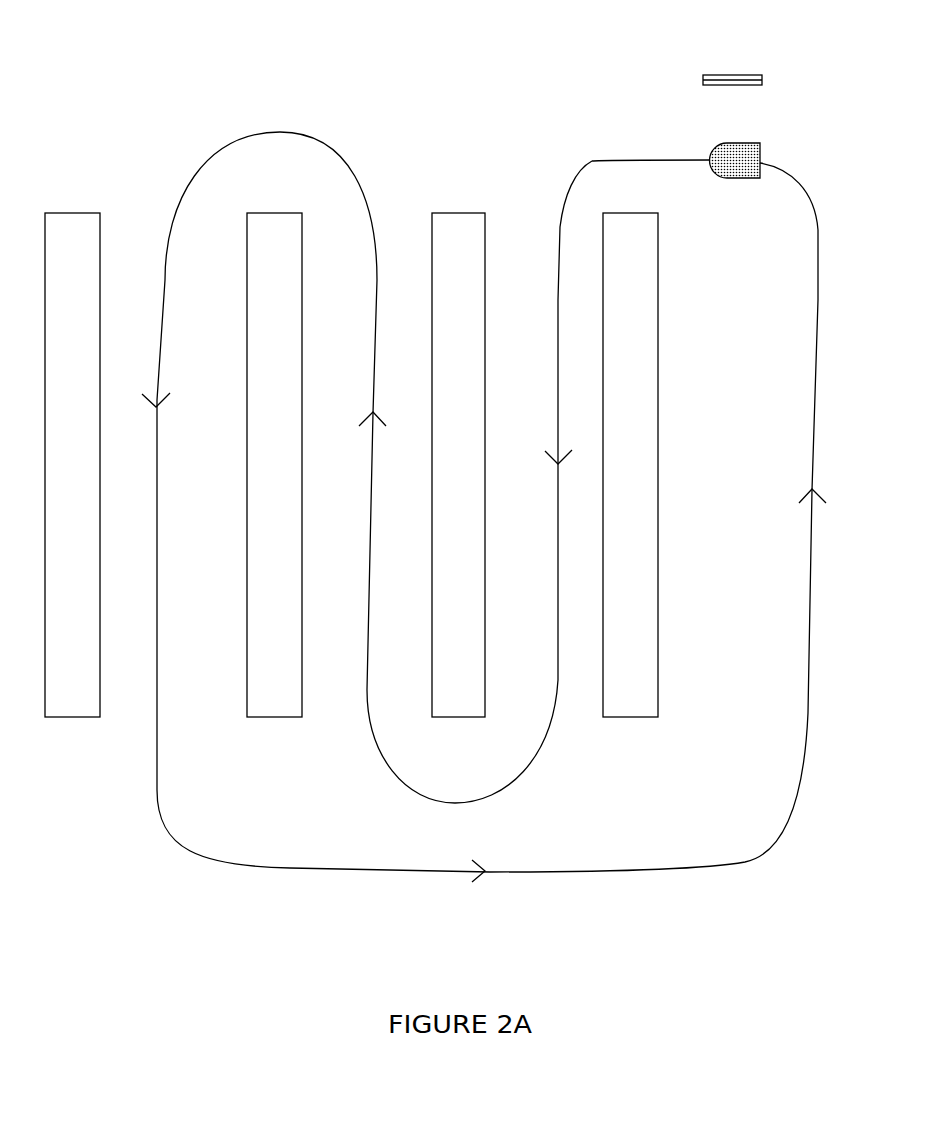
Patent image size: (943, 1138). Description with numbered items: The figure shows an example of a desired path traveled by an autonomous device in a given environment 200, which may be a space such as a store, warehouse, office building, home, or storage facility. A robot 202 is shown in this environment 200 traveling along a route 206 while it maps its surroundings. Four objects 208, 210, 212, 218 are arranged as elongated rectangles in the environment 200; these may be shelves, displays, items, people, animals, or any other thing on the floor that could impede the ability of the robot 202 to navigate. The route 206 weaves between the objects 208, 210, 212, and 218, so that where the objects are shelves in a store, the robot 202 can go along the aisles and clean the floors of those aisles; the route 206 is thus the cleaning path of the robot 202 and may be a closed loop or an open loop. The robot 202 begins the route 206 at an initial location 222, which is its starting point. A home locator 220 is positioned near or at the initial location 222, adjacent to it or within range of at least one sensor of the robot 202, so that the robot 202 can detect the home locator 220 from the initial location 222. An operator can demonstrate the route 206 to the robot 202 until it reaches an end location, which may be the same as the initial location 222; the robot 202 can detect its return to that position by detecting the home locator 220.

The environment 200 is at (177, 102).
The robot 202 is at (728, 148).
The route 206 is at (602, 158).
The object 208 is at (258, 250).
The object 210 is at (442, 250).
The object 212 is at (614, 250).
The object 218 is at (56, 250).
The home locator 220 is at (707, 75).
The initial location 222 is at (741, 190).